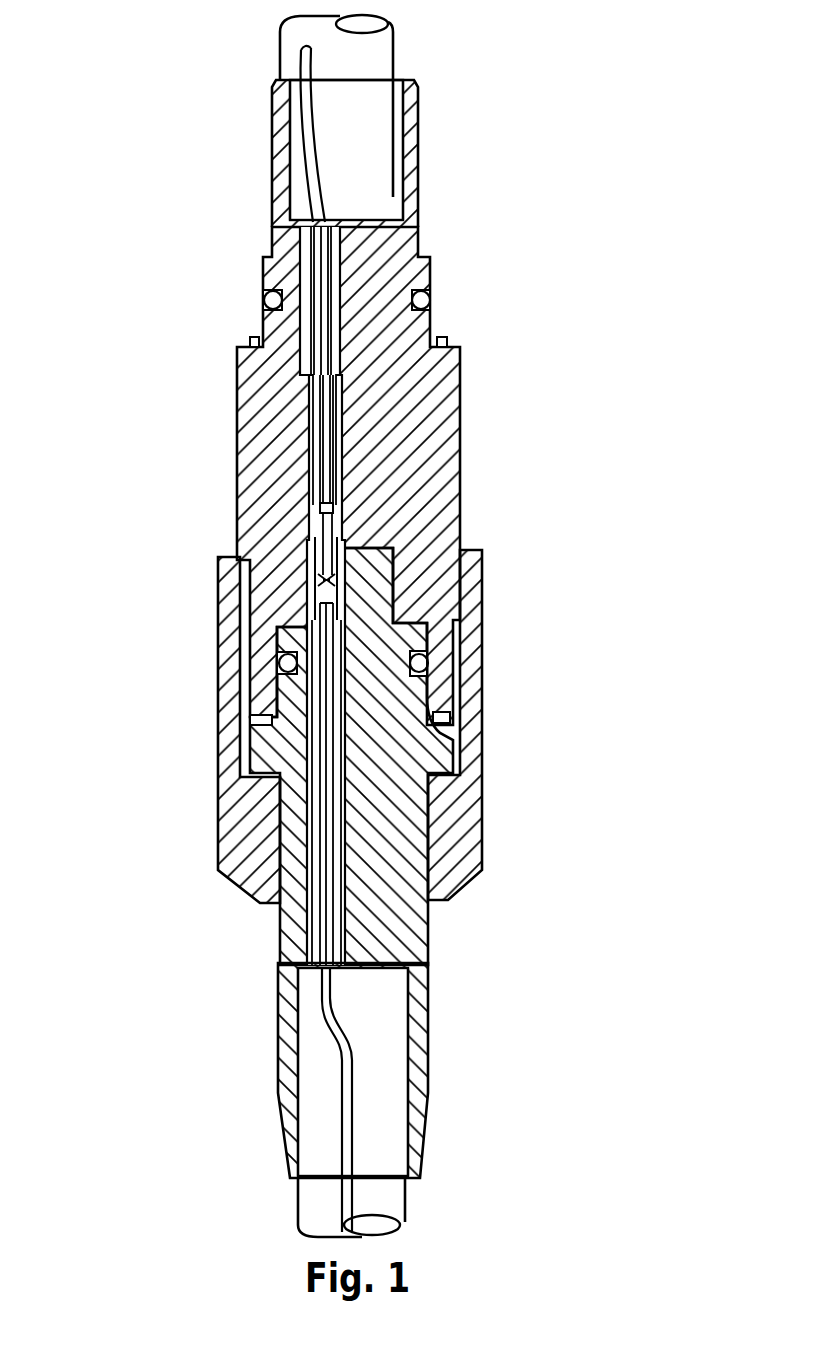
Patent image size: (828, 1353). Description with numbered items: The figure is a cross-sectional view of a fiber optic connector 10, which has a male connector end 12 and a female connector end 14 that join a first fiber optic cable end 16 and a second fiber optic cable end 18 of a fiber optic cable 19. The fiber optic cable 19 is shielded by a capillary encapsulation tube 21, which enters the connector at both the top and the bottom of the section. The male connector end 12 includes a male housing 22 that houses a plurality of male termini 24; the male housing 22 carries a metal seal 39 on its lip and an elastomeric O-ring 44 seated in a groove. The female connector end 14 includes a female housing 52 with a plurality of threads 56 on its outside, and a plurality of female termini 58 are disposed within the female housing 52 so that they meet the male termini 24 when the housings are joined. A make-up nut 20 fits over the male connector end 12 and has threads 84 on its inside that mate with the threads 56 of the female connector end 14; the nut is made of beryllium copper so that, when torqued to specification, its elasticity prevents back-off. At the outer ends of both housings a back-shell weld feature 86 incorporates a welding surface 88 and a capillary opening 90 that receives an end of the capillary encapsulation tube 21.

The fiber optic connector 10 is at (150, 573).
The male connector end 12 is at (264, 928).
The female connector end 14 is at (289, 476).
The first fiber optic cable end 16 is at (349, 1066).
The second fiber optic cable end 18 is at (323, 252).
The fiber optic cable 19 is at (302, 62).
The make-up nut 20 is at (240, 827).
The capillary encapsulation tube 21 is at (395, 54).
The male housing 22 is at (351, 756).
The male termini 24 is at (320, 582).
The metal seal 39 is at (451, 719).
The elastomeric O-ring 44 is at (426, 661).
The female housing 52 is at (348, 476).
The threads 56 is at (219, 683).
The female termini 58 is at (316, 522).
The threads 84 is at (255, 640).
The back-shell weld feature 86 is at (258, 80).
The welding surface 88 is at (413, 97).
The capillary opening 90 is at (417, 194).